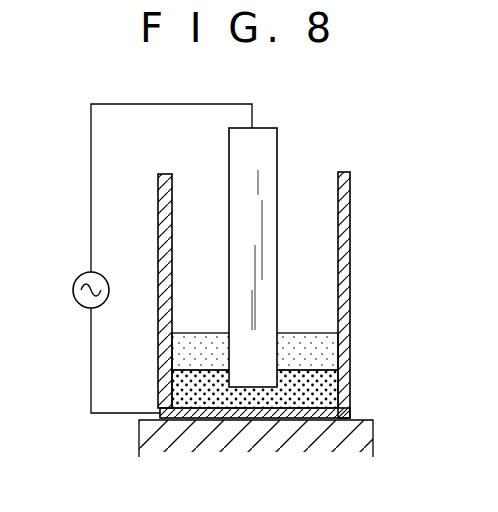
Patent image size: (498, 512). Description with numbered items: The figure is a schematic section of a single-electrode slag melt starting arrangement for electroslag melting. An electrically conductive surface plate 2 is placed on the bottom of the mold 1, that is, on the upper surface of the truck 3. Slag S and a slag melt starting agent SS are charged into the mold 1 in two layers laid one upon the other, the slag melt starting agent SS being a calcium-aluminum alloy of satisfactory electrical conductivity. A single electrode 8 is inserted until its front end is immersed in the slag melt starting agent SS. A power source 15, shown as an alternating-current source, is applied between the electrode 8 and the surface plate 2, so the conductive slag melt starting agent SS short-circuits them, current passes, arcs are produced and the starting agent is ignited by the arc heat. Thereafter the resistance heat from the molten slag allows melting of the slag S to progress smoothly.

The mold 1 is at (343, 272).
The surface plate 2 is at (348, 412).
The truck 3 is at (362, 437).
The electrode 8 is at (267, 153).
The power source 15 is at (107, 281).
The slag S is at (322, 353).
The slag melt starting agent SS is at (327, 392).